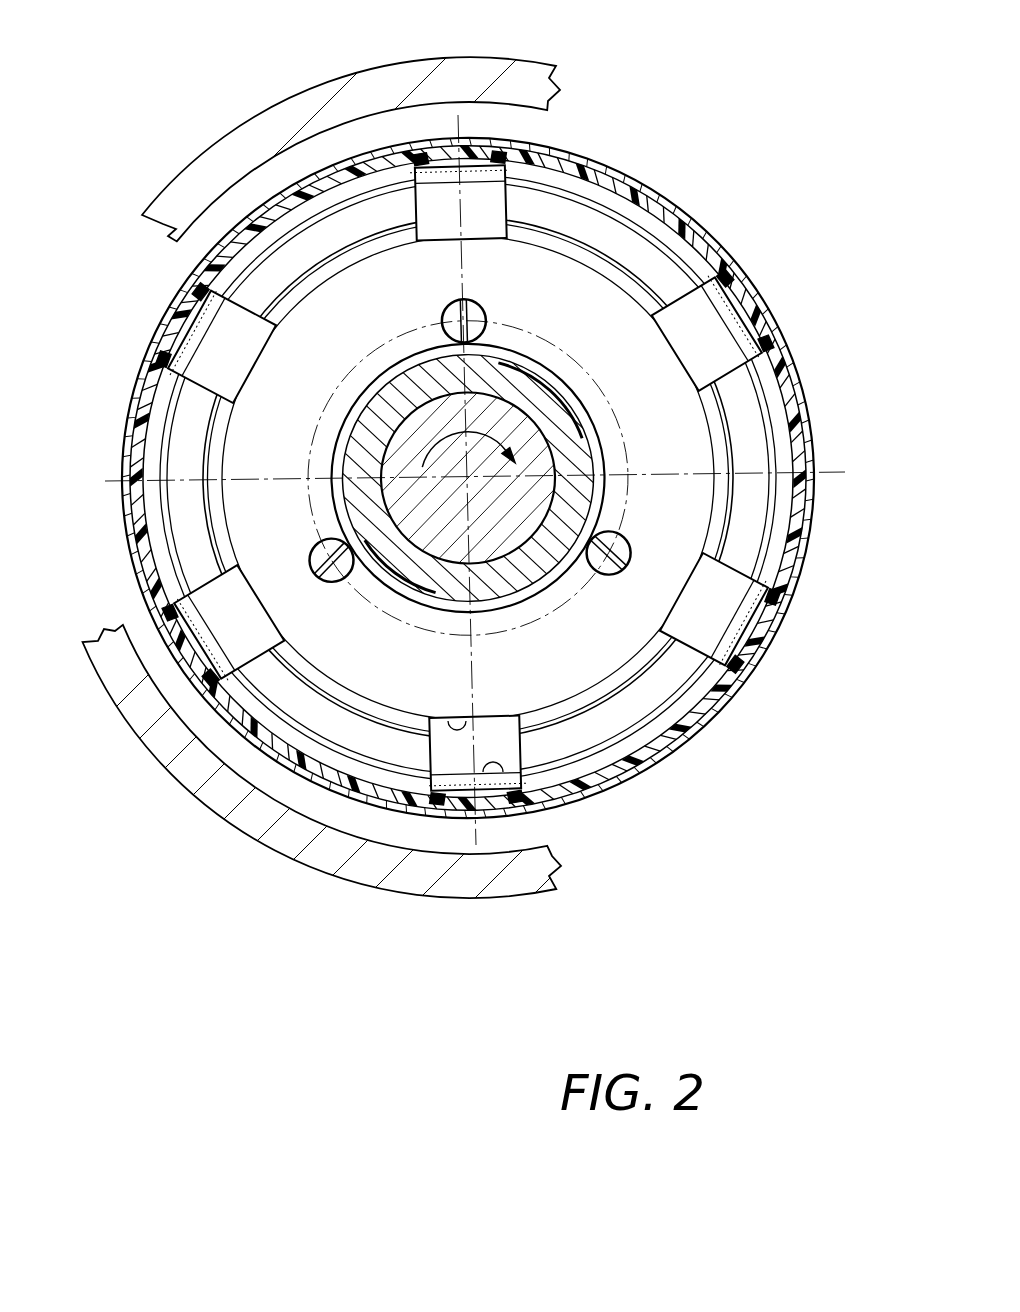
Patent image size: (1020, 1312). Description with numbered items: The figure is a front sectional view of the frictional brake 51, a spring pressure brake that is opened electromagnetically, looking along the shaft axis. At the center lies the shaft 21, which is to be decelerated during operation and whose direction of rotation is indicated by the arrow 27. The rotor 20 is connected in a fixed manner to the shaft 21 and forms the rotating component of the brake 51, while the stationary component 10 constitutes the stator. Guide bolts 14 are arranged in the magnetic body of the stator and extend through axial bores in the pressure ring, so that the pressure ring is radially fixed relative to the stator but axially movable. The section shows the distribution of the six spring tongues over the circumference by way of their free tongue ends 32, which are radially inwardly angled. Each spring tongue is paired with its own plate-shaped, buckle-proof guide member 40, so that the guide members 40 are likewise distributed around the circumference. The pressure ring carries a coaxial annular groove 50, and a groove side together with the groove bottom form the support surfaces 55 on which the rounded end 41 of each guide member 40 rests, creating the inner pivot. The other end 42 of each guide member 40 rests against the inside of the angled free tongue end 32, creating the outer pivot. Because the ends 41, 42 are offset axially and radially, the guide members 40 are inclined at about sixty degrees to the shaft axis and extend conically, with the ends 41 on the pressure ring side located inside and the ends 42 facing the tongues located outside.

The stationary component 10 is at (405, 868).
The guide bolts 14 is at (604, 563).
The rotor 20 is at (537, 598).
The shaft 21 is at (532, 425).
The arrow 27 is at (500, 495).
The free tongue ends 32 is at (520, 155).
The guide members 40 is at (690, 313).
The end of guide member 41 is at (450, 722).
The other end of guide member 42 is at (556, 808).
The annular groove 50 is at (630, 670).
The frictional brake 51 is at (772, 121).
The support surfaces 55 is at (722, 513).